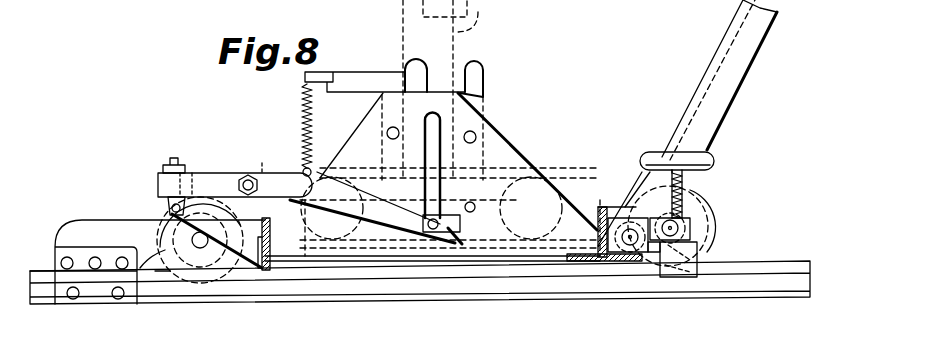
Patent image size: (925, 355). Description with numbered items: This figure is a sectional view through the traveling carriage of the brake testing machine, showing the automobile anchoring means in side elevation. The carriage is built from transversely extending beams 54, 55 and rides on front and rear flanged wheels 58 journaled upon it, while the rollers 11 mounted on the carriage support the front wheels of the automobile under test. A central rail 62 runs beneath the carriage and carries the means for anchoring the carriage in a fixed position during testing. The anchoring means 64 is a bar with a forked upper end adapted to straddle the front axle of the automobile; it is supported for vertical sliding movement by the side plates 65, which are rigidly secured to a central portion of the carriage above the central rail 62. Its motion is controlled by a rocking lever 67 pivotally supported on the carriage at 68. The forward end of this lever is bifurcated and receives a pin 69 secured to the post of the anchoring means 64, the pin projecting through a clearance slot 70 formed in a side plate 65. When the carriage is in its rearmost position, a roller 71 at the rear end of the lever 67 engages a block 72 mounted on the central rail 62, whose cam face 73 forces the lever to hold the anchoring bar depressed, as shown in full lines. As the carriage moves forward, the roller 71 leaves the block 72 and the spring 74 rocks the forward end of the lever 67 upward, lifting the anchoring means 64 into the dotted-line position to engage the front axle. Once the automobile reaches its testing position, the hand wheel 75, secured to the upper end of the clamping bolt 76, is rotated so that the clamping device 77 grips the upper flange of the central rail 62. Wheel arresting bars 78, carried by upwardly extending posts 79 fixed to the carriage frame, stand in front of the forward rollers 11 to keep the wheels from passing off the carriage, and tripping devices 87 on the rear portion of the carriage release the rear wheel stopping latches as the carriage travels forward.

The rollers 11 is at (352, 174).
The transversely extending beam 54 is at (628, 261).
The transversely extending beam 55 is at (272, 240).
The flanged wheels 58 is at (258, 186).
The central rail 62 is at (727, 278).
The anchoring means 64 is at (483, 67).
The side plates 65 is at (507, 143).
The rocking lever 67 is at (211, 173).
The pivot 68 is at (250, 181).
The pin 69 is at (476, 208).
The clearance slot 70 is at (470, 103).
The roller 71 is at (172, 213).
The block 72 is at (80, 228).
The cam face 73 is at (235, 242).
The spring 74 is at (303, 116).
The hand wheel 75 is at (712, 156).
The clamping bolt 76 is at (686, 196).
The clamping device 77 is at (680, 275).
The wheel arresting bars 78 is at (768, 8).
The posts 79 is at (710, 59).
The tripping devices 87 is at (162, 273).